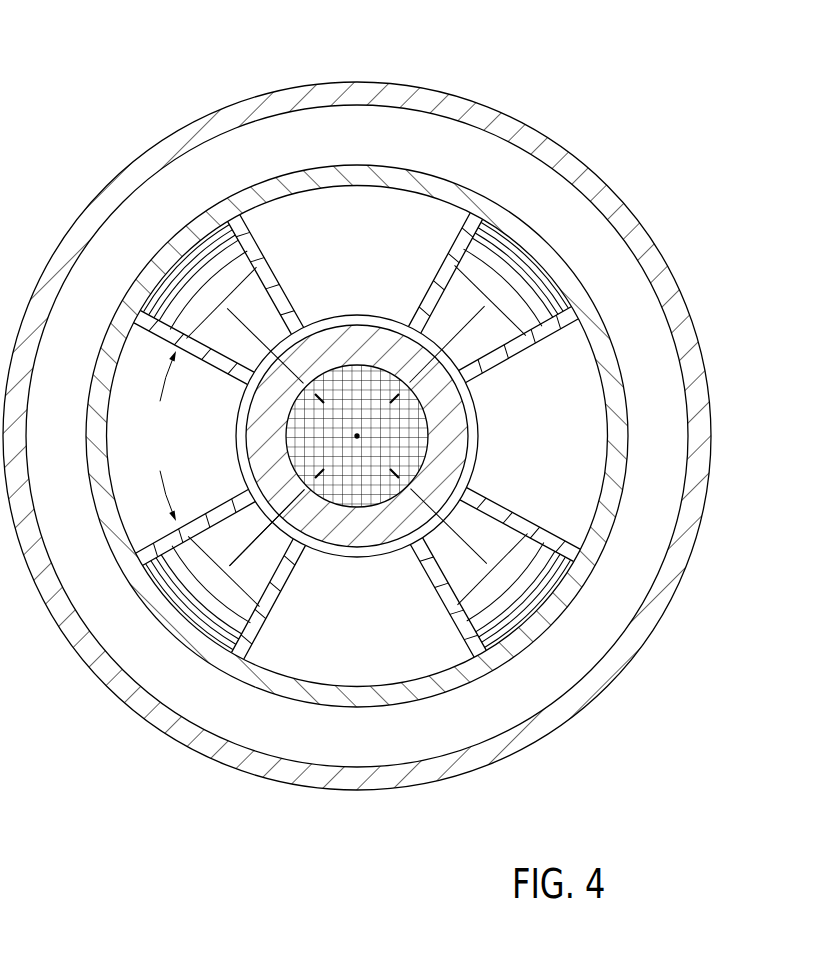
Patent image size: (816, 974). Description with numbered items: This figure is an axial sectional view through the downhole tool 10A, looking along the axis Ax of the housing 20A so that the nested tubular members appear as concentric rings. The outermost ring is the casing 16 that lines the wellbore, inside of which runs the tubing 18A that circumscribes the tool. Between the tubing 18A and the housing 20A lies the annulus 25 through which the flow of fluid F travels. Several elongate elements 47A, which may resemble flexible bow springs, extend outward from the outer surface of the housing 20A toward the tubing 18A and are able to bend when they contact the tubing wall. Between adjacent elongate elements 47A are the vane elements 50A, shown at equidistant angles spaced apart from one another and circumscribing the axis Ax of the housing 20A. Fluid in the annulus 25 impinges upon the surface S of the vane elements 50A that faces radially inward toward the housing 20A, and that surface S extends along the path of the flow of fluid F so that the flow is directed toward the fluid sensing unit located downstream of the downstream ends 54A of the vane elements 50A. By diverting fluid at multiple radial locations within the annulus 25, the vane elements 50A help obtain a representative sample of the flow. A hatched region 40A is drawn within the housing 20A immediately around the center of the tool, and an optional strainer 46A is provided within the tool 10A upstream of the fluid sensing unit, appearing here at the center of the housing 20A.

The downhole tool 10A is at (304, 208).
The casing 16 is at (693, 340).
The tubing 18A is at (598, 300).
The annulus 25 is at (378, 205).
The elongate elements 47A is at (145, 290).
The vane elements 50A is at (523, 243).
The downstream ends 54A is at (440, 330).
The flow of fluid F is at (483, 550).
The surface S is at (248, 566).
The hub ring 40A is at (445, 420).
The housing 20A is at (345, 345).
The strainer 46A is at (369, 508).
The axis Ax is at (350, 442).